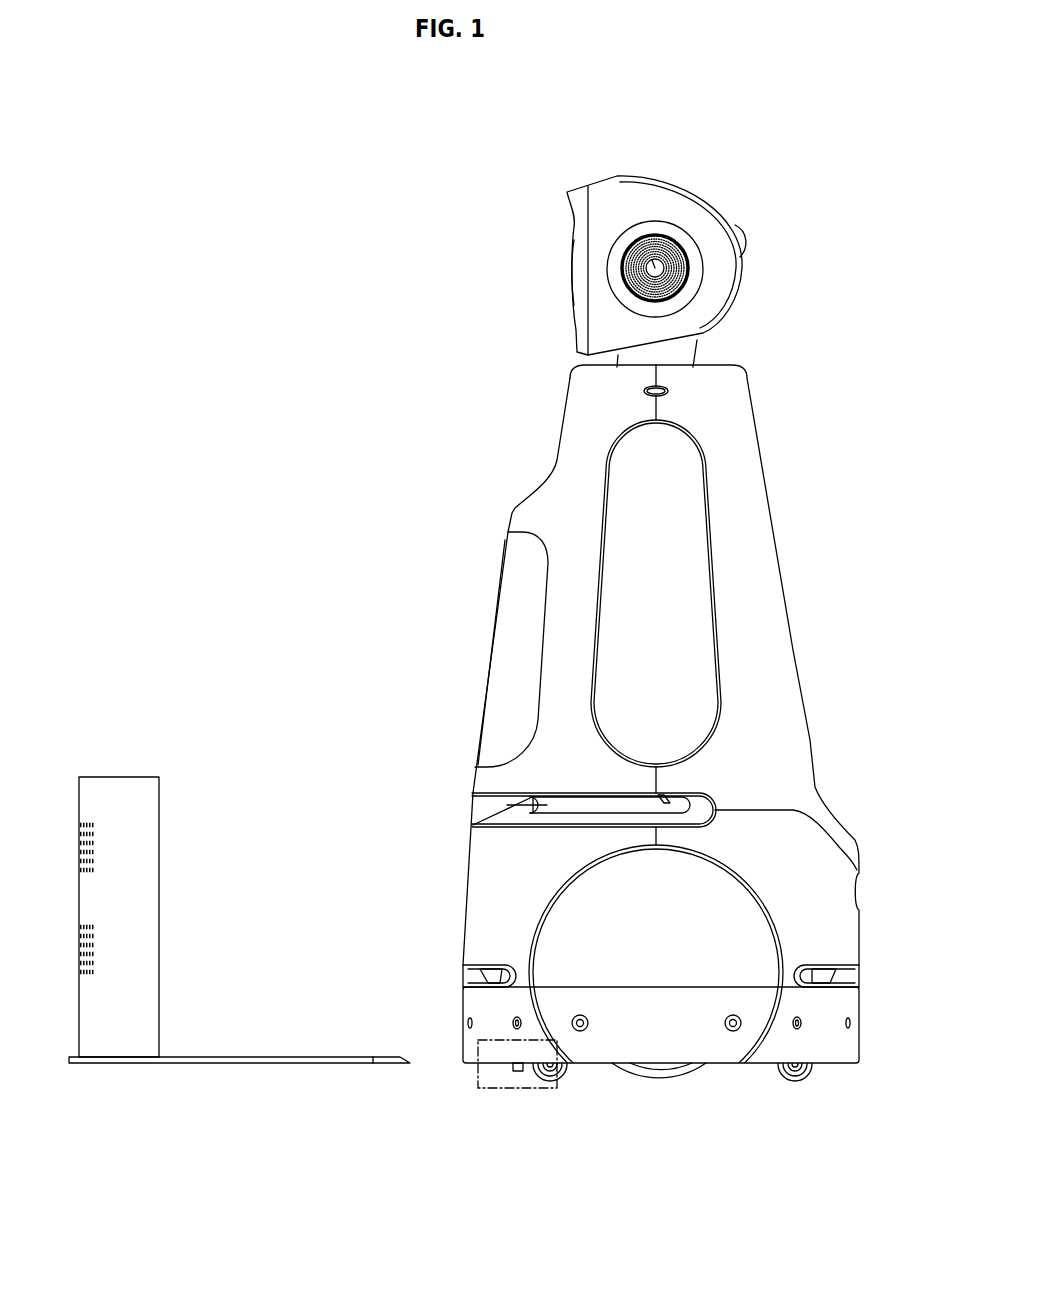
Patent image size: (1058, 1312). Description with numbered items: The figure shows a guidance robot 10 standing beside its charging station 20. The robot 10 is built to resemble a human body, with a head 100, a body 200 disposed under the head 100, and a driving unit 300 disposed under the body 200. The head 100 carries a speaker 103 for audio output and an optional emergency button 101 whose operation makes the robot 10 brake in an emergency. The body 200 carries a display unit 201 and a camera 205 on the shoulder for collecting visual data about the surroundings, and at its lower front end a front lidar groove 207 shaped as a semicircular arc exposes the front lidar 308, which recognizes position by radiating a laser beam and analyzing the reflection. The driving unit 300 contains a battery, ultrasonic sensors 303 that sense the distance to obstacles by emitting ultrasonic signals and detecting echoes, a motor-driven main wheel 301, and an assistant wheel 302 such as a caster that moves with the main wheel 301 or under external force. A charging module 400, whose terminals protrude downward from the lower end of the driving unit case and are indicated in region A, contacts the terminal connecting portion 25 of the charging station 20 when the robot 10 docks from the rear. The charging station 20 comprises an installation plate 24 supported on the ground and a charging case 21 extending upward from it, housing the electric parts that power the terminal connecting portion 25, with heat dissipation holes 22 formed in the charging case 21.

The robot 10 is at (505, 210).
The head 100 is at (766, 273).
The emergency button 101 is at (746, 236).
The speaker 103 is at (648, 237).
The body 200 is at (773, 404).
The display unit 201 is at (784, 583).
The camera 205 is at (643, 388).
The front lidar groove 207 is at (475, 826).
The front lidar 308 is at (507, 800).
The driving unit 300 is at (833, 1086).
The main wheel 301 is at (655, 1081).
The assistant wheel 302 is at (549, 1080).
The ultrasonic sensor 303 is at (734, 1031).
The charging module 400 is at (510, 1094).
The detail region A is at (478, 1078).
The charging station 20 is at (124, 736).
The charging case 21 is at (160, 808).
The heat dissipation holes 22 is at (79, 843).
The installation plate 24 is at (264, 1065).
The terminal connecting portion 25 is at (387, 1065).